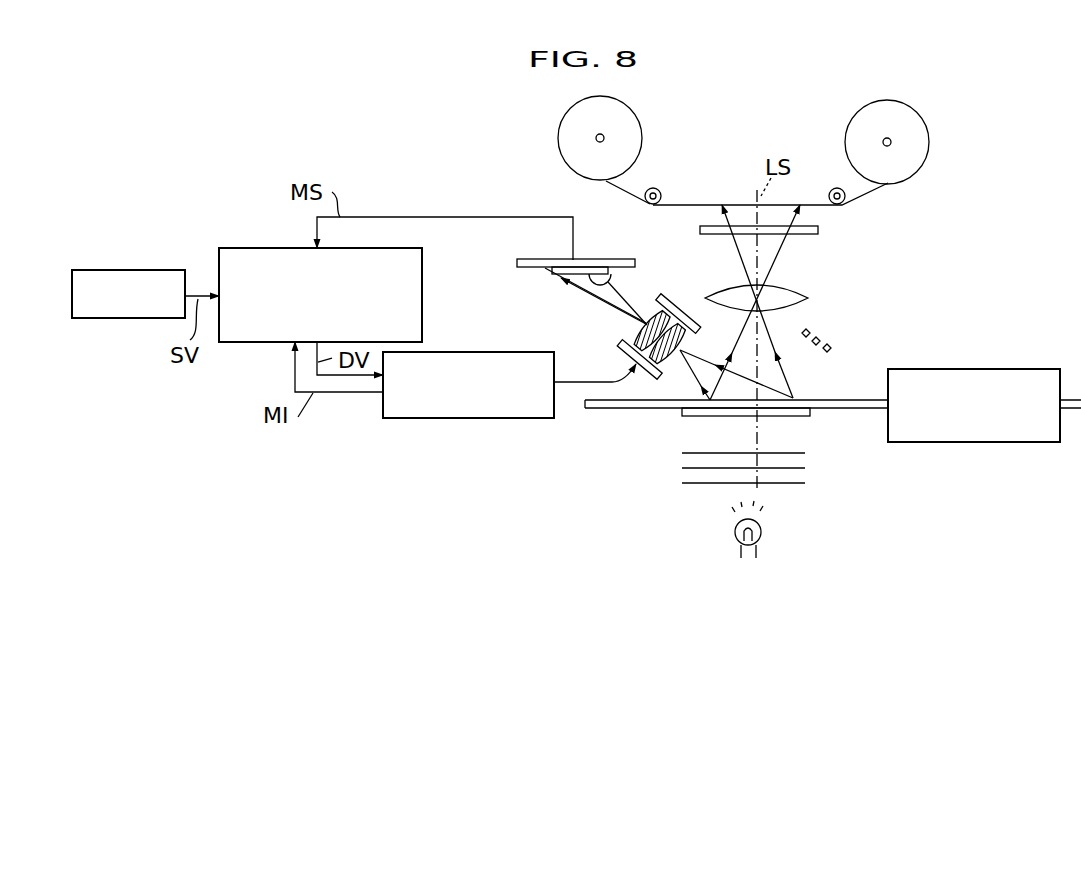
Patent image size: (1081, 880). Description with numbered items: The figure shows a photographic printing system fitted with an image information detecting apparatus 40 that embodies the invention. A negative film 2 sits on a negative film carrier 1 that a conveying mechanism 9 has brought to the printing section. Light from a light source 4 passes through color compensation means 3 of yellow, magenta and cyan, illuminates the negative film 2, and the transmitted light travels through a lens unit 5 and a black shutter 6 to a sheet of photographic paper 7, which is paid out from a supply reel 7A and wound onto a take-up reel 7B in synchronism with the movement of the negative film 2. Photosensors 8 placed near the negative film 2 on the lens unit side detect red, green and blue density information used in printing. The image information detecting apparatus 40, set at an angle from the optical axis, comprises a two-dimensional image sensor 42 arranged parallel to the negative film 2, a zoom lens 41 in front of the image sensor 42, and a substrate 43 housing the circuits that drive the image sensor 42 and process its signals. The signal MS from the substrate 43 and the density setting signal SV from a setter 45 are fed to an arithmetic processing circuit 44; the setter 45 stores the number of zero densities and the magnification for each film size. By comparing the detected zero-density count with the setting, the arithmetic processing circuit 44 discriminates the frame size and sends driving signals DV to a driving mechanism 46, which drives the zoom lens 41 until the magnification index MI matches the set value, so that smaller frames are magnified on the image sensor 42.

The negative film carrier 1 is at (808, 417).
The negative film 2 is at (597, 413).
The color compensation means 3 is at (825, 445).
The light source 4 is at (761, 531).
The lens unit 5 is at (807, 297).
The black shutter 6 is at (818, 231).
The photographic paper 7 is at (688, 204).
The supply reel 7A is at (637, 128).
The take-up reel 7B is at (927, 123).
The photosensors 8 is at (805, 317).
The conveying mechanism 9 is at (1013, 369).
The image information detecting apparatus 40 is at (547, 290).
The zoom lens 41 is at (673, 367).
The two-dimensional image sensor 42 is at (612, 281).
The substrate 43 is at (598, 259).
The arithmetic processing circuit 44 is at (228, 248).
The setter 45 is at (97, 270).
The driving mechanism 46 is at (452, 352).